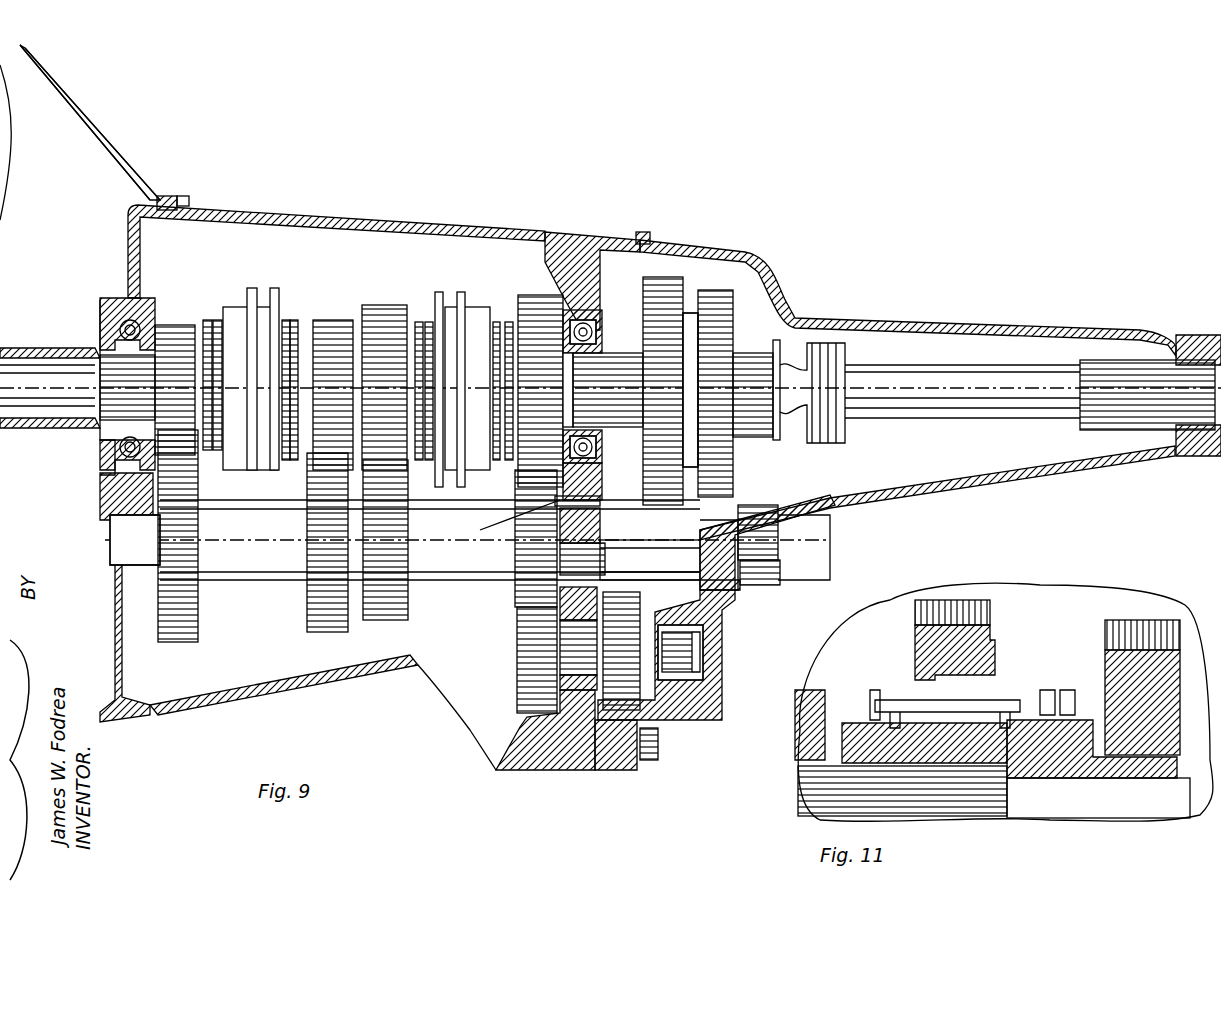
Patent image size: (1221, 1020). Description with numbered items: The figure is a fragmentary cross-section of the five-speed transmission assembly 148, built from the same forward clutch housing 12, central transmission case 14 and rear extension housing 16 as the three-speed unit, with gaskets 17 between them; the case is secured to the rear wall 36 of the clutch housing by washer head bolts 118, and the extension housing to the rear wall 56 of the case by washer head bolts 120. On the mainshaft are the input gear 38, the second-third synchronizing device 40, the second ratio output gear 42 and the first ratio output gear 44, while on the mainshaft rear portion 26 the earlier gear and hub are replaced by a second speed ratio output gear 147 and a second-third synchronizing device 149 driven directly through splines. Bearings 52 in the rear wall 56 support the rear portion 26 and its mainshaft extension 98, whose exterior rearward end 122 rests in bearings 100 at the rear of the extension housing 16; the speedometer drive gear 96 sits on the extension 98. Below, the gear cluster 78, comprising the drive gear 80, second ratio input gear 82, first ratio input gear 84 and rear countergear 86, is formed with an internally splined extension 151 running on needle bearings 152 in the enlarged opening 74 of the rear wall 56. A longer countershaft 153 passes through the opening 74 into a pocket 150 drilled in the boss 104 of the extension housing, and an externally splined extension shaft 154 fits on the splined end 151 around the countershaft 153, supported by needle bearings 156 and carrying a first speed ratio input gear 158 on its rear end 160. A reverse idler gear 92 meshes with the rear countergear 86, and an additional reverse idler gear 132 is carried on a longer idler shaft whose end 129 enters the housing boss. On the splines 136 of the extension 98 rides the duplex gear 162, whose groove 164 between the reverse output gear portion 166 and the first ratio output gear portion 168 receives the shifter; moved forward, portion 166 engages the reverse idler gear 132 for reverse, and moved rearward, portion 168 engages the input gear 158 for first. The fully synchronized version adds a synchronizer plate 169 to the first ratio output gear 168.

In FIG. 9, the clutch housing 12 is at (45, 82).
In FIG. 9, the five-speed transmission assembly 148 is at (133, 128).
In FIG. 9, the gaskets 17 is at (165, 192).
In FIG. 9, the washer head bolts 118 is at (185, 198).
In FIG. 9, the transmission case 14 is at (360, 222).
In FIG. 9, the rear wall 36 is at (140, 268).
In FIG. 9, the input gear 38 is at (170, 335).
In FIG. 9, the second-third synchronizing device 40 is at (252, 300).
In FIG. 9, the second ratio output gear 42 is at (330, 330).
In FIG. 9, the first ratio output gear 44 is at (382, 320).
In FIG. 9, the second-third synchronizing device 149 is at (462, 300).
In FIG. 9, the second speed ratio output gear 147 is at (545, 310).
In FIG. 9, the rear wall 56 is at (592, 298).
In FIG. 9, the mainshaft rear portion 26 is at (585, 365).
In FIG. 9, the bearings 52 is at (600, 447).
In FIG. 11, the bearings 52 is at (830, 700).
In FIG. 9, the opening 74 is at (598, 480).
In FIG. 9, the internally splined extension 151 is at (600, 500).
In FIG. 9, the reverse output gear portion 166 is at (660, 275).
In FIG. 11, the reverse output gear portion 166 is at (950, 600).
In FIG. 9, the reverse output and first ratio output duplex gear 162 is at (690, 312).
In FIG. 9, the groove 164 is at (712, 290).
In FIG. 9, the splines 136 is at (748, 365).
In FIG. 9, the speedometer drive gear 96 is at (835, 425).
In FIG. 9, the mainshaft extension 98 is at (878, 378).
In FIG. 11, the mainshaft extension 98 is at (1105, 800).
In FIG. 9, the bearings 100 is at (1176, 352).
In FIG. 9, the exterior rearward end 122 is at (1135, 410).
In FIG. 9, the extension housing 16 is at (945, 326).
In FIG. 9, the first ratio output gear portion 168 is at (755, 270).
In FIG. 11, the first ratio output gear portion 168 is at (1110, 630).
In FIG. 9, the washer head bolts 120 is at (642, 232).
In FIG. 9, the pocket 150 is at (790, 515).
In FIG. 9, the end 129 is at (688, 655).
In FIG. 9, the needle bearings 156 is at (730, 585).
In FIG. 9, the gear cluster 78 is at (281, 594).
In FIG. 9, the drive gear 80 is at (180, 630).
In FIG. 9, the second ratio input gear 82 is at (320, 610).
In FIG. 9, the first ratio input gear 84 is at (380, 590).
In FIG. 9, the rear countergear 86 is at (525, 572).
In FIG. 9, the reverse idler gear 92 is at (525, 650).
In FIG. 9, the longer countershaft 153 is at (818, 576).
In FIG. 9, the needle bearings 152 is at (519, 516).
In FIG. 9, the externally splined extension shaft 154 is at (625, 508).
In FIG. 9, the reverse idler gear 132 is at (628, 605).
In FIG. 9, the rear end 160 is at (740, 560).
In FIG. 9, the first speed ratio input gear 158 is at (750, 505).
In FIG. 9, the boss 104 is at (782, 515).
In FIG. 11, the synchronizer plate 169 is at (885, 700).